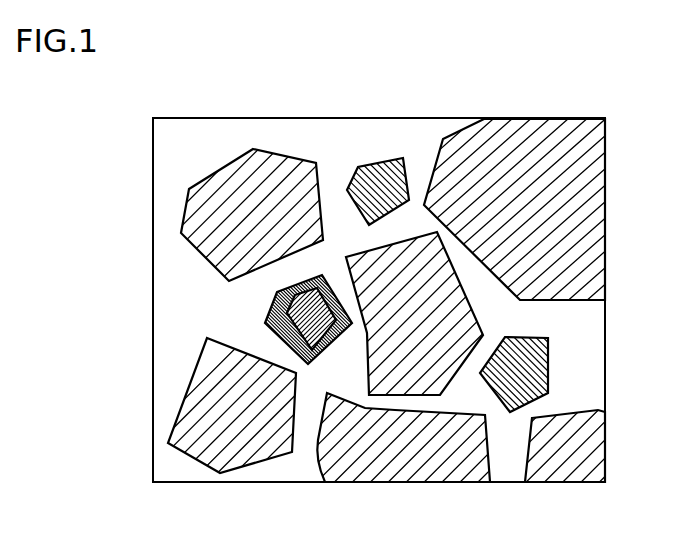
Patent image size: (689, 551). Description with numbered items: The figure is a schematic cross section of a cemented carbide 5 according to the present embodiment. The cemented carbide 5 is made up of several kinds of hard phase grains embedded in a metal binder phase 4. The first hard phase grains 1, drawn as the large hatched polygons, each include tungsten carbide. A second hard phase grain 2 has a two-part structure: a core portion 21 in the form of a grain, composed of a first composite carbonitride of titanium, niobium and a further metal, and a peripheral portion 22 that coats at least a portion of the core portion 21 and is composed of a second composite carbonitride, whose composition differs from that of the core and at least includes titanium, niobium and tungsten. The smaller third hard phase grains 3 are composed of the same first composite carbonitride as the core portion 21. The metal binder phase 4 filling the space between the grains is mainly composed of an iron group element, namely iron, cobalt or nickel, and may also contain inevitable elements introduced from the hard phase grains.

The first hard phase grains 1 is at (243, 170).
The second hard phase grains 2 is at (242, 319).
The core portion 21 is at (290, 307).
The peripheral portion 22 is at (268, 330).
The third hard phase grains 3 is at (380, 167).
The metal binder phase 4 is at (597, 331).
The cemented carbide 5 is at (630, 113).